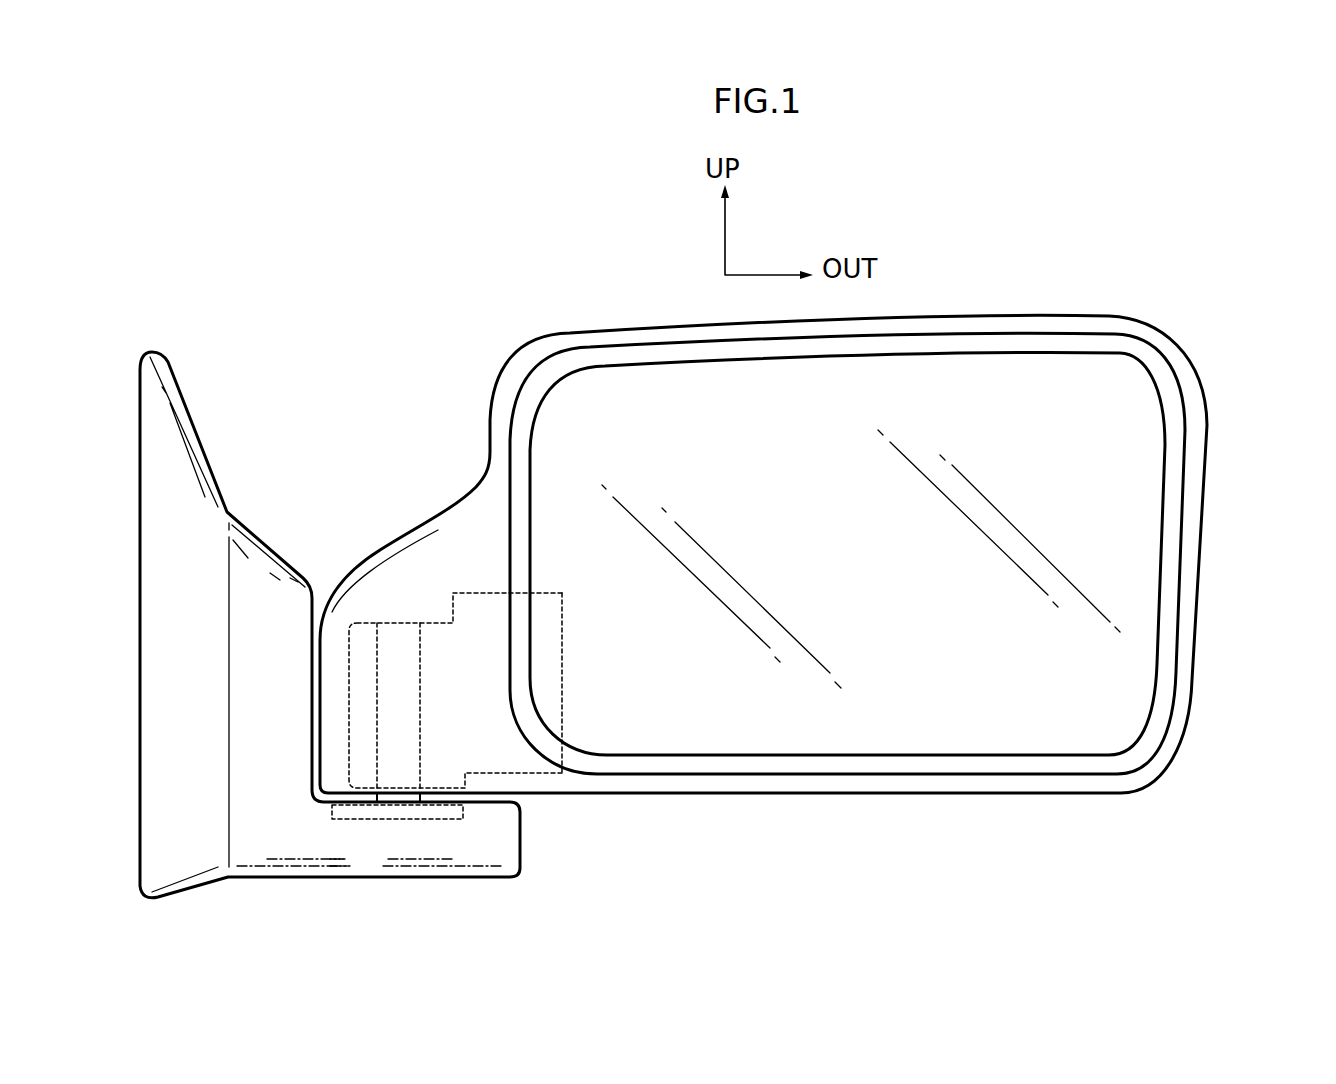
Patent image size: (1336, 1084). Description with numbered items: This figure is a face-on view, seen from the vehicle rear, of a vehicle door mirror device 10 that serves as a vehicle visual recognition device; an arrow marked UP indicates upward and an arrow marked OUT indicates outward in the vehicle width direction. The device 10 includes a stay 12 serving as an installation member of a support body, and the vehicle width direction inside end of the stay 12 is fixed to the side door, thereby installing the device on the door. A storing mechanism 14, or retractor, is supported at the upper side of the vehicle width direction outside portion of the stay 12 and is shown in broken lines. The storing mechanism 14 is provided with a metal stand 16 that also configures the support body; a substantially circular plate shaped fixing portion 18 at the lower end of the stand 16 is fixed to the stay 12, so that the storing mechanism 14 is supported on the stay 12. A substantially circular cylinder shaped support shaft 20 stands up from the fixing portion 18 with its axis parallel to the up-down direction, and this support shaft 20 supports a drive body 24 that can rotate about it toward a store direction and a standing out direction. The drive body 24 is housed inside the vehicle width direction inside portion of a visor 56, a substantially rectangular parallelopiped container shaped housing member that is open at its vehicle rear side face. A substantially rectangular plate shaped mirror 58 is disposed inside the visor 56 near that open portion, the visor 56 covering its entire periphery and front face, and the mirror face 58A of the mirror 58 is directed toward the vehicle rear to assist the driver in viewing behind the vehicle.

The vehicle door mirror device 10 is at (352, 345).
The stay 12 is at (216, 470).
The storing mechanism 14 is at (563, 622).
The stand 16 is at (366, 701).
The fixing portion 18 is at (408, 820).
The support shaft 20 is at (421, 723).
The drive body 24 is at (563, 685).
The visor 56 is at (1204, 556).
The mirror 58 is at (1133, 656).
The mirror face 58A is at (943, 712).